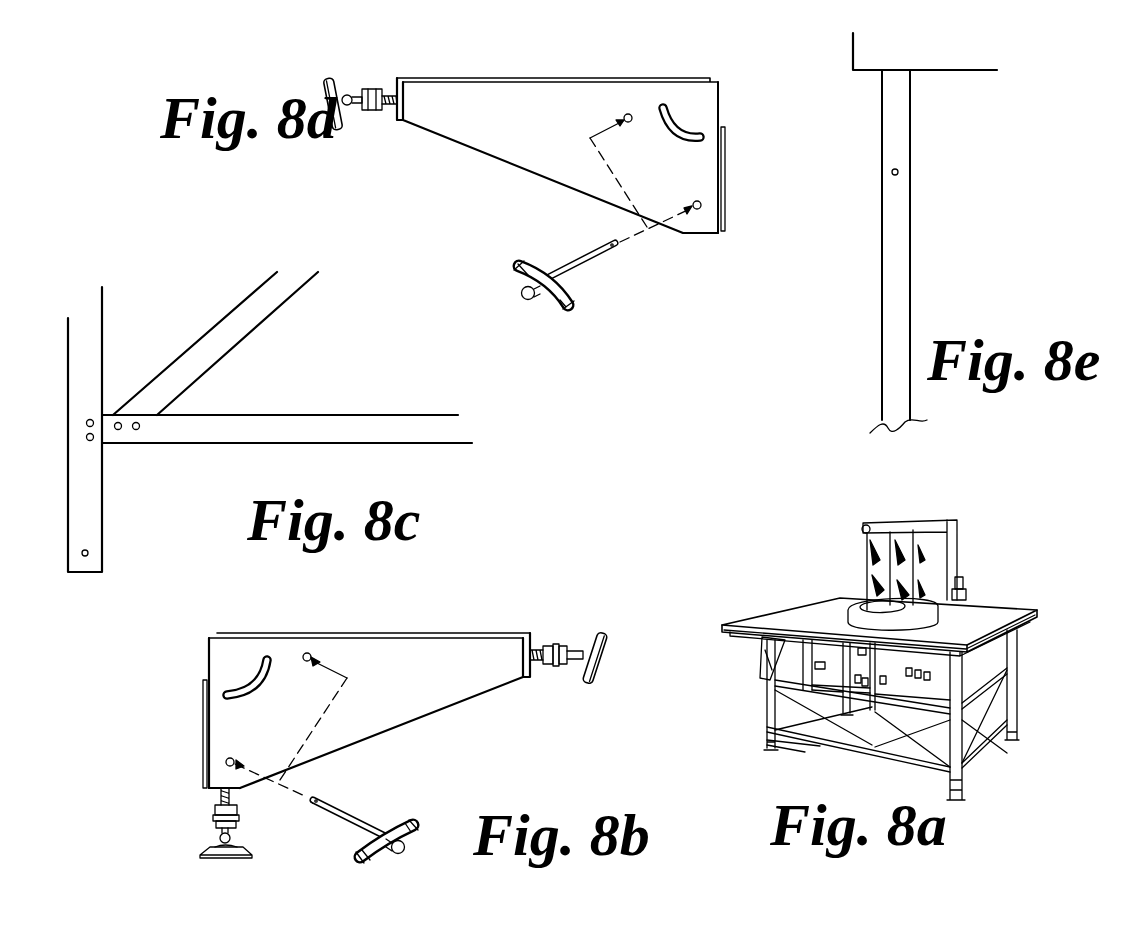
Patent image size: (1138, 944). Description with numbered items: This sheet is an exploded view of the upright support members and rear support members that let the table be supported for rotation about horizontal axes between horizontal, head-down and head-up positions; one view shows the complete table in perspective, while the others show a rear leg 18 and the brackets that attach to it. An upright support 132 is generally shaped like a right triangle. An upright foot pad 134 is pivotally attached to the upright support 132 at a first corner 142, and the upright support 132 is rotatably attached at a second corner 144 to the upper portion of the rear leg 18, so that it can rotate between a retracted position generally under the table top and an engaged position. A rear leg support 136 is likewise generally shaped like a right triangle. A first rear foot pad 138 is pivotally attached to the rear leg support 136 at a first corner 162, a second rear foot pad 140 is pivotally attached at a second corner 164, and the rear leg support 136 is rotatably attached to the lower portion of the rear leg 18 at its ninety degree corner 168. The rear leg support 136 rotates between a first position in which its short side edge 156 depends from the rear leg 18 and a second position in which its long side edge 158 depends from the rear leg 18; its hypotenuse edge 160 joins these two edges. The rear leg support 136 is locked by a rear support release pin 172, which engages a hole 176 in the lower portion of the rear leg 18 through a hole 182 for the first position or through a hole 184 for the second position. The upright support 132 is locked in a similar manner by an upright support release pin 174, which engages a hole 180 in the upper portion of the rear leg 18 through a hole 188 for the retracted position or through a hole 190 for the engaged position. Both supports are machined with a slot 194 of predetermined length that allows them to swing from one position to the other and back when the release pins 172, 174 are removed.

In FIG. 8E, the rear leg 18 is at (910, 260).
In FIG. 8C, the rear leg 18 is at (102, 478).
In FIG. 8A, the rear leg 18 is at (879, 660).
In FIG. 8D, the upright support 132 is at (478, 120).
In FIG. 8D, the upright foot pad 134 is at (343, 80).
In FIG. 8B, the rear leg support 136 is at (448, 677).
In FIG. 8B, the first rear foot pad 138 is at (208, 842).
In FIG. 8B, the second rear foot pad 140 is at (602, 640).
In FIG. 8D, the first corner 142 is at (422, 92).
In FIG. 8D, the second corner 144 is at (713, 93).
In FIG. 8B, the short side edge 156 is at (203, 703).
In FIG. 8B, the long side edge 158 is at (397, 633).
In FIG. 8B, the diagonal edge 160 is at (387, 733).
In FIG. 8B, the first corner 162 is at (215, 777).
In FIG. 8B, the second corner 164 is at (507, 653).
In FIG. 8B, the 90 degree corner 168 is at (215, 650).
In FIG. 8B, the rear support release pin 172 is at (350, 827).
In FIG. 8D, the upright support release pin 174 is at (580, 272).
In FIG. 8C, the hole 176 is at (90, 553).
In FIG. 8E, the hole 180 is at (900, 172).
In FIG. 8B, the hole 182 is at (225, 762).
In FIG. 8B, the hole 184 is at (305, 652).
In FIG. 8D, the hole 188 is at (627, 114).
In FIG. 8D, the hole 190 is at (703, 205).
In FIG. 8D, the slot 194 is at (700, 139).
In FIG. 8B, the slot 194 is at (237, 680).